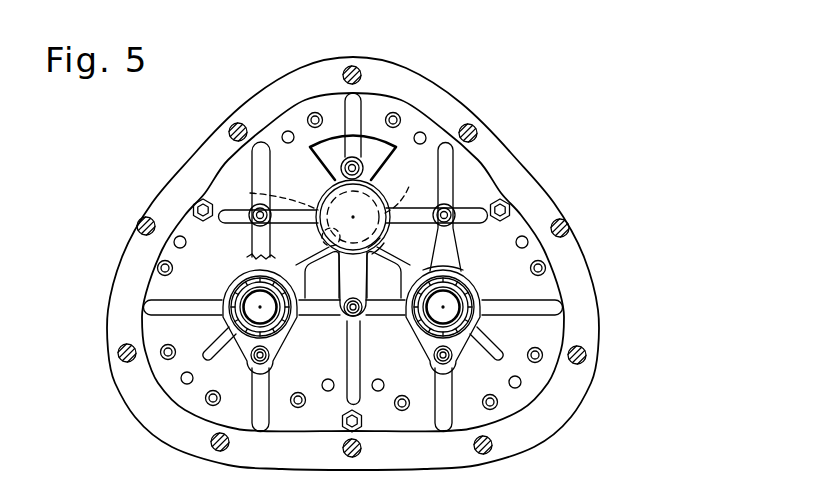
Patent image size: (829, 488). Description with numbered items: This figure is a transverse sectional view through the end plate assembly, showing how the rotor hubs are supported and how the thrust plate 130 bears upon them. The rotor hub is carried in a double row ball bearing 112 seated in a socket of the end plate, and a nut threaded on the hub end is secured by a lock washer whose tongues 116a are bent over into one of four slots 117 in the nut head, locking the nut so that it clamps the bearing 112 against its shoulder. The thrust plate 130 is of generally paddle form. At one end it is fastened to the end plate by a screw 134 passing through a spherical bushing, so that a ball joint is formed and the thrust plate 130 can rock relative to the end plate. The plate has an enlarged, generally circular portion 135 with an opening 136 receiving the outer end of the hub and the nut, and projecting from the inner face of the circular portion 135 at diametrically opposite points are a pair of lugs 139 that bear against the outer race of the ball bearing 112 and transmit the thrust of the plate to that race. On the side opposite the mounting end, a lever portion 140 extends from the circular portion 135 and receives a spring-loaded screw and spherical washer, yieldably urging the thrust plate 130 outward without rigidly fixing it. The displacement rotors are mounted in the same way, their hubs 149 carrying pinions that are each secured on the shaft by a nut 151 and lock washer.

The double row ball bearing 112 is at (243, 292).
The tongues of lock washer 116a is at (441, 282).
The slots 117 is at (427, 318).
The thrust plate 130 is at (350, 277).
The screw 134 is at (454, 209).
The circular portion 135 is at (320, 205).
The opening 136 is at (323, 240).
The lugs 139 is at (318, 200).
The lever portion 140 is at (456, 242).
The hubs of displacement rotors 149 is at (256, 311).
The nut 151 is at (428, 334).